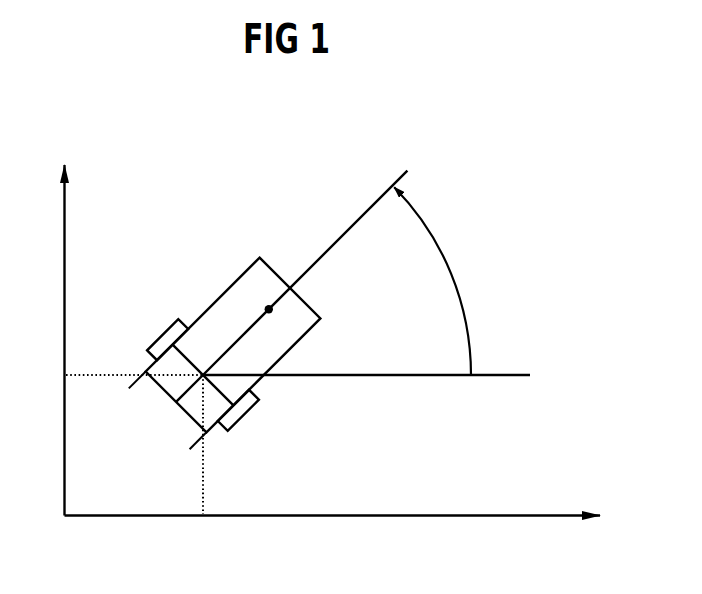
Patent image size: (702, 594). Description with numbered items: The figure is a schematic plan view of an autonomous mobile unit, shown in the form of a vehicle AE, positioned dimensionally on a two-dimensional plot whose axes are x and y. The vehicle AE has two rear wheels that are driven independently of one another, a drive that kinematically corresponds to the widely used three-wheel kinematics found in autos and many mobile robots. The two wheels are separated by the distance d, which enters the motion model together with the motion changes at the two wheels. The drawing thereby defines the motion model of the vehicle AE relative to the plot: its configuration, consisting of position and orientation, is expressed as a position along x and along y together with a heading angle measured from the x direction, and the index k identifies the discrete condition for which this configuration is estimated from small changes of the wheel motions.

The vehicle AE is at (259, 269).
The distance between the two wheels d is at (194, 444).
The x axis x is at (345, 543).
The y axis y is at (52, 340).